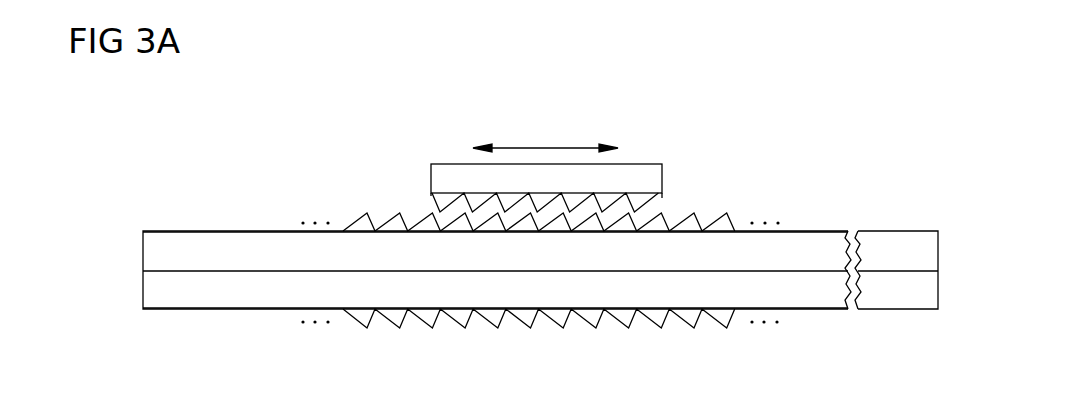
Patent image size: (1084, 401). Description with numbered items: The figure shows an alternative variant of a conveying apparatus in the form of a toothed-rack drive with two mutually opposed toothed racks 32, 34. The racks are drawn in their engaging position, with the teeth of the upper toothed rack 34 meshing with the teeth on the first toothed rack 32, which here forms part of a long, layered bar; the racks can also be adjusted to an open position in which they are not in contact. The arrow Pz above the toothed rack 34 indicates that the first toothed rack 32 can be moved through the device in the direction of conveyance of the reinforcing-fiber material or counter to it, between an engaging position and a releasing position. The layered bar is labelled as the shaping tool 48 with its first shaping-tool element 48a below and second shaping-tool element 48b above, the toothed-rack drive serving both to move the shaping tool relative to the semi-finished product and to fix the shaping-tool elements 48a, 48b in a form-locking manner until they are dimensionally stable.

The first toothed rack 32 is at (729, 221).
The toothed rack 34 is at (652, 179).
The shaping tool 48 is at (151, 208).
The first shaping-tool element 48a is at (230, 300).
The second shaping-tool element 48b is at (230, 243).
The arrow Pz is at (545, 148).